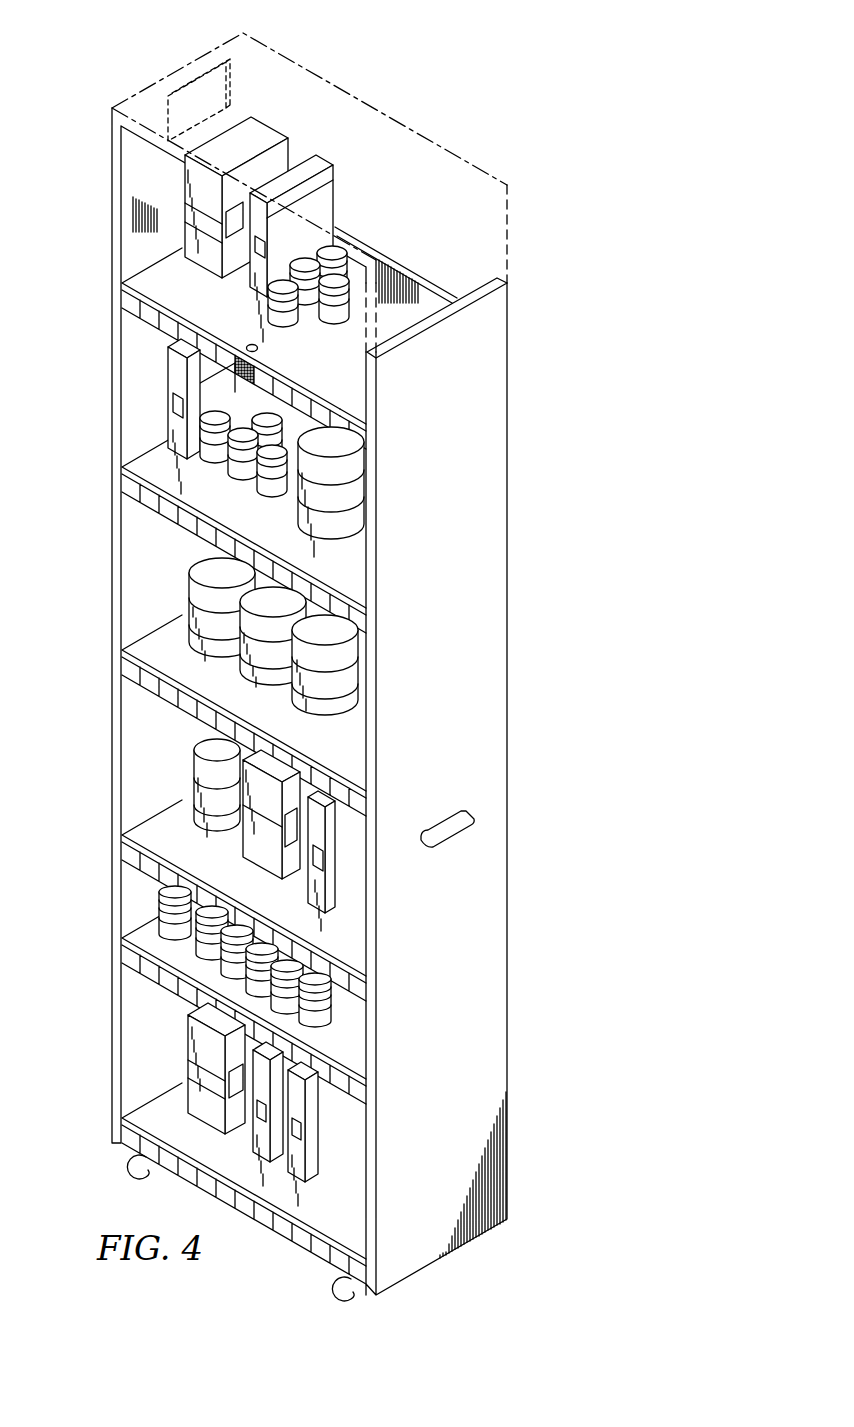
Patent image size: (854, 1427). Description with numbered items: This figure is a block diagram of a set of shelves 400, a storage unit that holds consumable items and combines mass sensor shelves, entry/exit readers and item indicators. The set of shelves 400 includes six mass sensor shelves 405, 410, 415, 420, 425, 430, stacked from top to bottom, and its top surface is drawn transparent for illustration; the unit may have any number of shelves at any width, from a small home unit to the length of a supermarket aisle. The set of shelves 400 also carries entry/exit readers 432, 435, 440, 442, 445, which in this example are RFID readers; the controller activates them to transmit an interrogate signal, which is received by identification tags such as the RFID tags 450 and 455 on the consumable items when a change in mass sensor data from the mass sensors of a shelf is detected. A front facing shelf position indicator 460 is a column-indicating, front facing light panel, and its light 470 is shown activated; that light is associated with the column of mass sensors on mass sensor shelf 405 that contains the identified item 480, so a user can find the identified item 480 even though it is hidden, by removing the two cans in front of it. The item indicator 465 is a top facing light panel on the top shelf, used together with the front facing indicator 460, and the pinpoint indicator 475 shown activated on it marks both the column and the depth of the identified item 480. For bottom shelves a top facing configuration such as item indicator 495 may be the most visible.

The set of shelves 400 is at (444, 63).
The mass sensor shelf 405 is at (164, 276).
The mass sensor shelf 410 is at (163, 458).
The mass sensor shelf 415 is at (163, 642).
The mass sensor shelf 420 is at (163, 826).
The mass sensor shelf 425 is at (155, 932).
The mass sensor shelf 430 is at (163, 1114).
The entry/exit reader 432 is at (188, 80).
The entry/exit reader 435 is at (141, 340).
The entry/exit reader 440 is at (141, 524).
The entry/exit reader 442 is at (141, 708).
The entry/exit reader 445 is at (141, 998).
The identification tag 450 is at (320, 485).
The identification tag 455 is at (200, 786).
The front facing shelf position indicator 460 is at (357, 448).
The item indicator 465 is at (355, 404).
The light 470 is at (240, 348).
The pinpoint indicator 475 is at (258, 349).
The identified item 480 is at (340, 263).
The item indicator 495 is at (352, 1246).